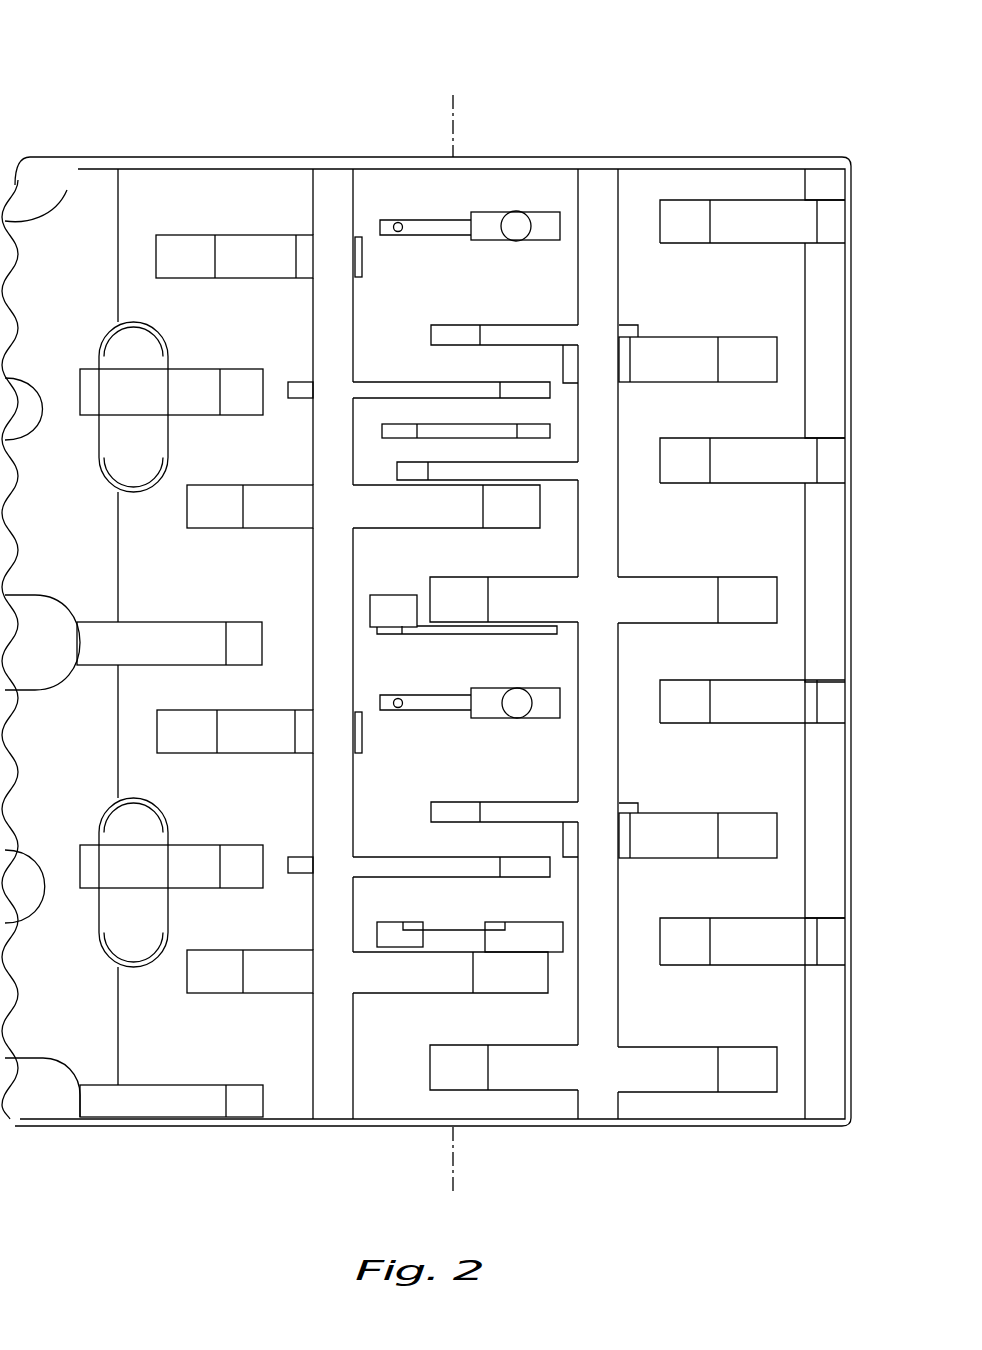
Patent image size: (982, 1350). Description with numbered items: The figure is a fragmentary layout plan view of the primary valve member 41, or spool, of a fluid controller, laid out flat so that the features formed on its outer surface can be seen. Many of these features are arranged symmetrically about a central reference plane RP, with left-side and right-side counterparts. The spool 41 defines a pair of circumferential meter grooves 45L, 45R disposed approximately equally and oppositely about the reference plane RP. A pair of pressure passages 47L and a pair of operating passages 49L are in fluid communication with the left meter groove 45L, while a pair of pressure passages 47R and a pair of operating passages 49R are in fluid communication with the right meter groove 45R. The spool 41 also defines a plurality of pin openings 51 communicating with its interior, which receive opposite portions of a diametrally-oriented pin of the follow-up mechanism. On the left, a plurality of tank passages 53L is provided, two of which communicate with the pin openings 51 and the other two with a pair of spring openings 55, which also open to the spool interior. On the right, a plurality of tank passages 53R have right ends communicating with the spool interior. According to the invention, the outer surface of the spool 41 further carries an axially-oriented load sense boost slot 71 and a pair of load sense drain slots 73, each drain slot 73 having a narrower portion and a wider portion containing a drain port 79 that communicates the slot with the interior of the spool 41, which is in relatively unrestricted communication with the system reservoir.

The primary valve member 41 is at (143, 86).
The circumferential meter groove 45L is at (334, 157).
The circumferential meter groove 45R is at (608, 185).
The pressure passages 47L is at (428, 516).
The pressure passages 47R is at (460, 585).
The operating passages 49L is at (217, 512).
The operating passages 49R is at (748, 584).
The pin openings 51 is at (130, 352).
The tank passages 53L is at (242, 385).
The tank passages 53R is at (689, 230).
The spring openings 55 is at (55, 198).
The load sense boost slot 71 is at (505, 442).
The load sense drain slots 73 is at (418, 239).
The drain port 79 is at (520, 236).
The central reference plane RP is at (463, 125).